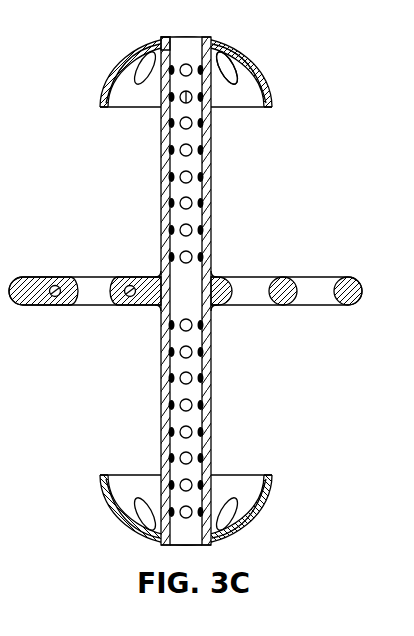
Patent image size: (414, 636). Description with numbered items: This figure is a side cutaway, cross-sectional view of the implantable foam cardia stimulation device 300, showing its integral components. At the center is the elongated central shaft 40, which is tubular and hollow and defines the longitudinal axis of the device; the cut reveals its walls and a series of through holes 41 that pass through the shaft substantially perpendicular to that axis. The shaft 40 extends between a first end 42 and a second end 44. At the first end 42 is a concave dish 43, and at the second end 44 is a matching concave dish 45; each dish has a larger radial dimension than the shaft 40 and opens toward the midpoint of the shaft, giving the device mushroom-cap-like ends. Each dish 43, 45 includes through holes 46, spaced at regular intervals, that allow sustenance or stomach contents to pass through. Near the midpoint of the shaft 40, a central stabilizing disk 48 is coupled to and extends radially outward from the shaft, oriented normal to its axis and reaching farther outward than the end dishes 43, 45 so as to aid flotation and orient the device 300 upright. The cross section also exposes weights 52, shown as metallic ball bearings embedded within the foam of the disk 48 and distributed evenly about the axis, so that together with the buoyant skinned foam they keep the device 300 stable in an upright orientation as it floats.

The implantable cardia stimulation device 300 is at (201, 286).
The elongated central shaft 40 is at (209, 196).
The through holes 41 is at (191, 228).
The first end 42 is at (167, 40).
The concave dish 43 is at (272, 82).
The second end 44 is at (192, 537).
The concave dish 45 is at (255, 520).
The through holes 46 is at (225, 70).
The central stabilizing disk 48 is at (345, 283).
The weights 52 is at (110, 307).